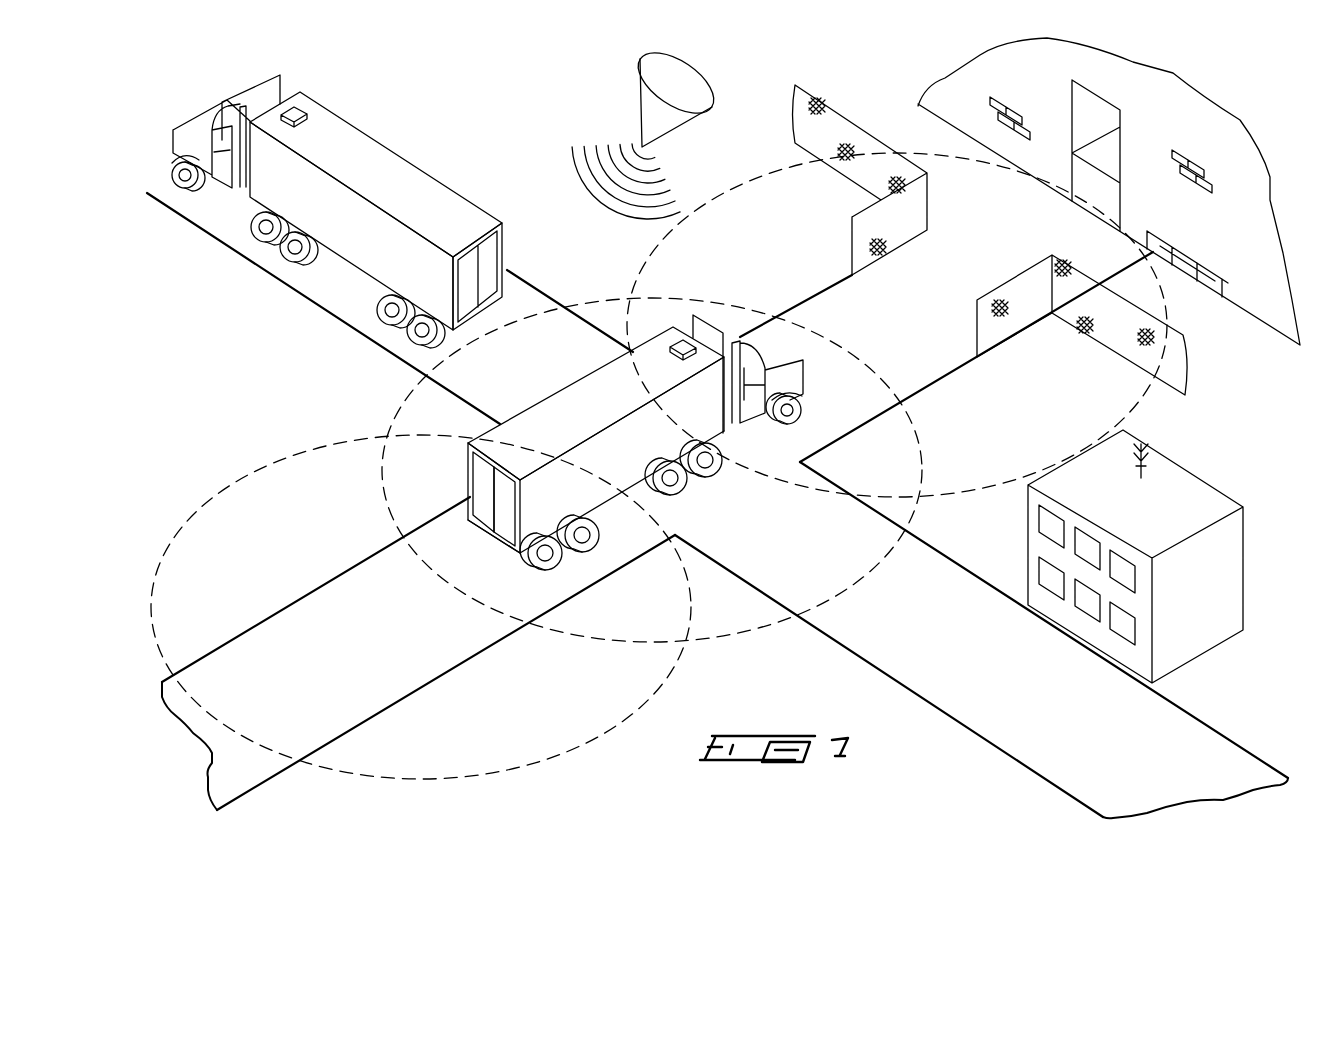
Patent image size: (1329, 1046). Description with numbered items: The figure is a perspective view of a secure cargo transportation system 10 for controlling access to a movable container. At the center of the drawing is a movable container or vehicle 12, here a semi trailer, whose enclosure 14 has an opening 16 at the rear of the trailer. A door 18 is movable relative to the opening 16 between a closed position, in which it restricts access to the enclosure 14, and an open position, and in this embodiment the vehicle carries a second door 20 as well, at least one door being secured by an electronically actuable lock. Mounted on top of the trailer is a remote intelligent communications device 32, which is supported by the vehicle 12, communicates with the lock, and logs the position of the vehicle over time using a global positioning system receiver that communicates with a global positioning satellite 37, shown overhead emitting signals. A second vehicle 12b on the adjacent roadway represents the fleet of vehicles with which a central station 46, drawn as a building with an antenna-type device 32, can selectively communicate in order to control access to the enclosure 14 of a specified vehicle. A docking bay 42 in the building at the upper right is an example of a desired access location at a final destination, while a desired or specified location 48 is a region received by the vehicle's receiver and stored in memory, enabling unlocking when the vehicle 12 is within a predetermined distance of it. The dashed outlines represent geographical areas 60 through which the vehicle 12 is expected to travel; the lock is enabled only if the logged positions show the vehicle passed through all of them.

The secure cargo transportation system 10 is at (614, 583).
The movable container or vehicle 12 is at (609, 461).
The vehicle 12b is at (432, 148).
The enclosure 14 is at (570, 467).
The opening 16 is at (481, 475).
The door 18 is at (480, 527).
The door 20 is at (495, 540).
The remote intelligent communications device 32 is at (687, 357).
The global positioning satellite 37 is at (640, 98).
The docking bay 42 is at (1110, 148).
The central station 46 is at (1222, 568).
The desired or specified location 48 is at (928, 140).
The geographical areas 60 is at (637, 281).